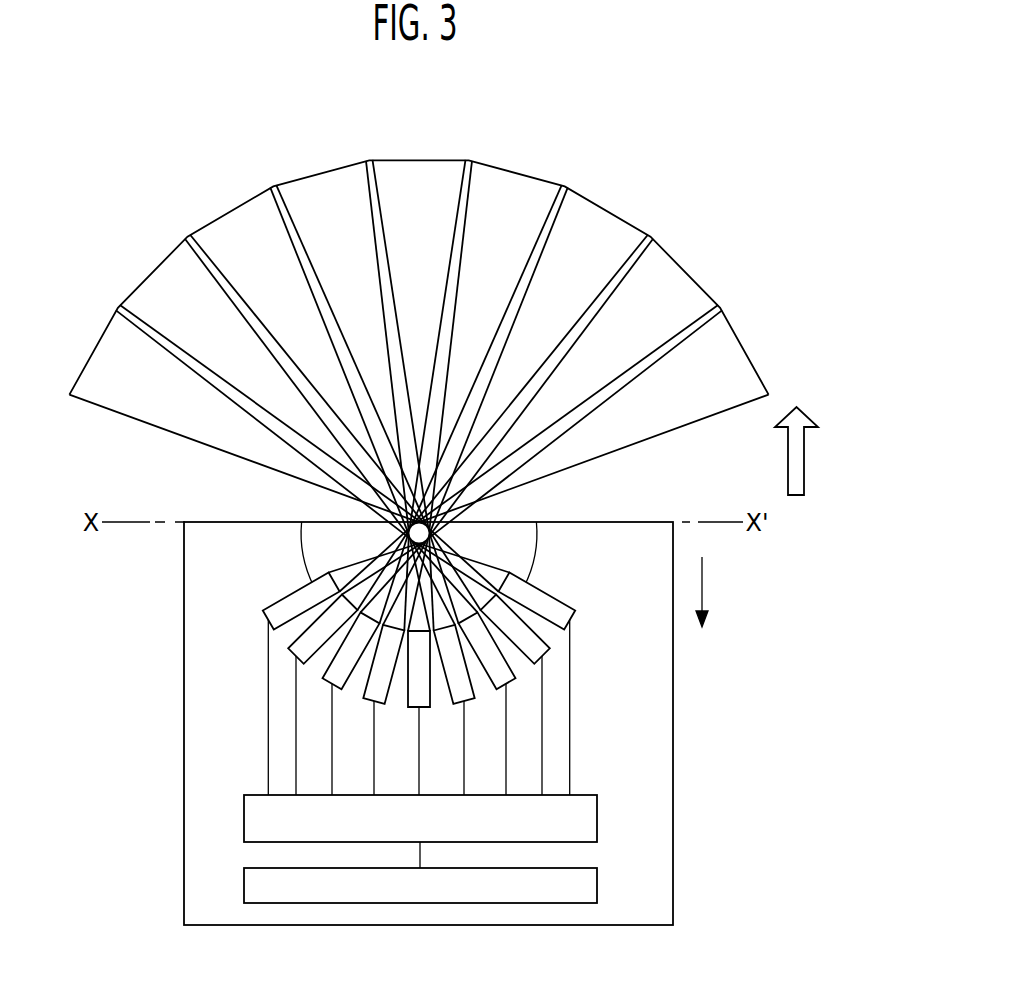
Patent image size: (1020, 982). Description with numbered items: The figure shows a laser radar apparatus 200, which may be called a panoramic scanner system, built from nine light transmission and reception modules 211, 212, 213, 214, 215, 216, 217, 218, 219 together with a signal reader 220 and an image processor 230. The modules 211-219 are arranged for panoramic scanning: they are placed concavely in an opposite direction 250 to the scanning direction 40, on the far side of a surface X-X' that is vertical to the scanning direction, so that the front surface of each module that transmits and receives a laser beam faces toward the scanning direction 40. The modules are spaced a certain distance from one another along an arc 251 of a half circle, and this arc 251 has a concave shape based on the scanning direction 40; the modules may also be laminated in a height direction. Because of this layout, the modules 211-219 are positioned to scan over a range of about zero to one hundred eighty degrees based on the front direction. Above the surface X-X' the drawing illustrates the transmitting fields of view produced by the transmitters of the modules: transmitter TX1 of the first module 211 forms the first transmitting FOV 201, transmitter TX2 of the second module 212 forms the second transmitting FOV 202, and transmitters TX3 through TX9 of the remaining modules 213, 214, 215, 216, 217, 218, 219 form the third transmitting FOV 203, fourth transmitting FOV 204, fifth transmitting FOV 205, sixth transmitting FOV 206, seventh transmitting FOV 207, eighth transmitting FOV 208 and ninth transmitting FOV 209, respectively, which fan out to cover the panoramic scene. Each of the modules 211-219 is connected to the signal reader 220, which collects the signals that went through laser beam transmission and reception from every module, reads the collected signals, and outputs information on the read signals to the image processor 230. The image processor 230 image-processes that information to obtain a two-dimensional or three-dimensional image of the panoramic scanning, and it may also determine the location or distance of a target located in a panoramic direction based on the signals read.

The scanning direction 40 is at (804, 447).
The laser radar apparatus 200 is at (673, 758).
The first transmitting FOV 201 is at (745, 352).
The second transmitting FOV 202 is at (682, 275).
The third transmitting FOV 203 is at (607, 214).
The fourth transmitting FOV 204 is at (517, 173).
The fifth transmitting FOV 205 is at (417, 159).
The sixth transmitting FOV 206 is at (322, 172).
The seventh transmitting FOV 207 is at (230, 211).
The eighth transmitting FOV 208 is at (155, 268).
The ninth transmitting FOV 209 is at (92, 350).
The first light transmission and reception module 211 is at (265, 611).
The second light transmission and reception module 212 is at (290, 651).
The third light transmission and reception module 213 is at (326, 683).
The fourth light transmission and reception module 214 is at (366, 700).
The fifth light transmission and reception module 215 is at (432, 708).
The sixth light transmission and reception module 216 is at (474, 699).
The seventh light transmission and reception module 217 is at (515, 679).
The eighth light transmission and reception module 218 is at (548, 649).
The ninth light transmission and reception module 219 is at (575, 611).
The signal reader 220 is at (597, 818).
The image processor 230 is at (597, 886).
The opposite direction 250 is at (702, 573).
The arc of a half circle 251 is at (531, 556).